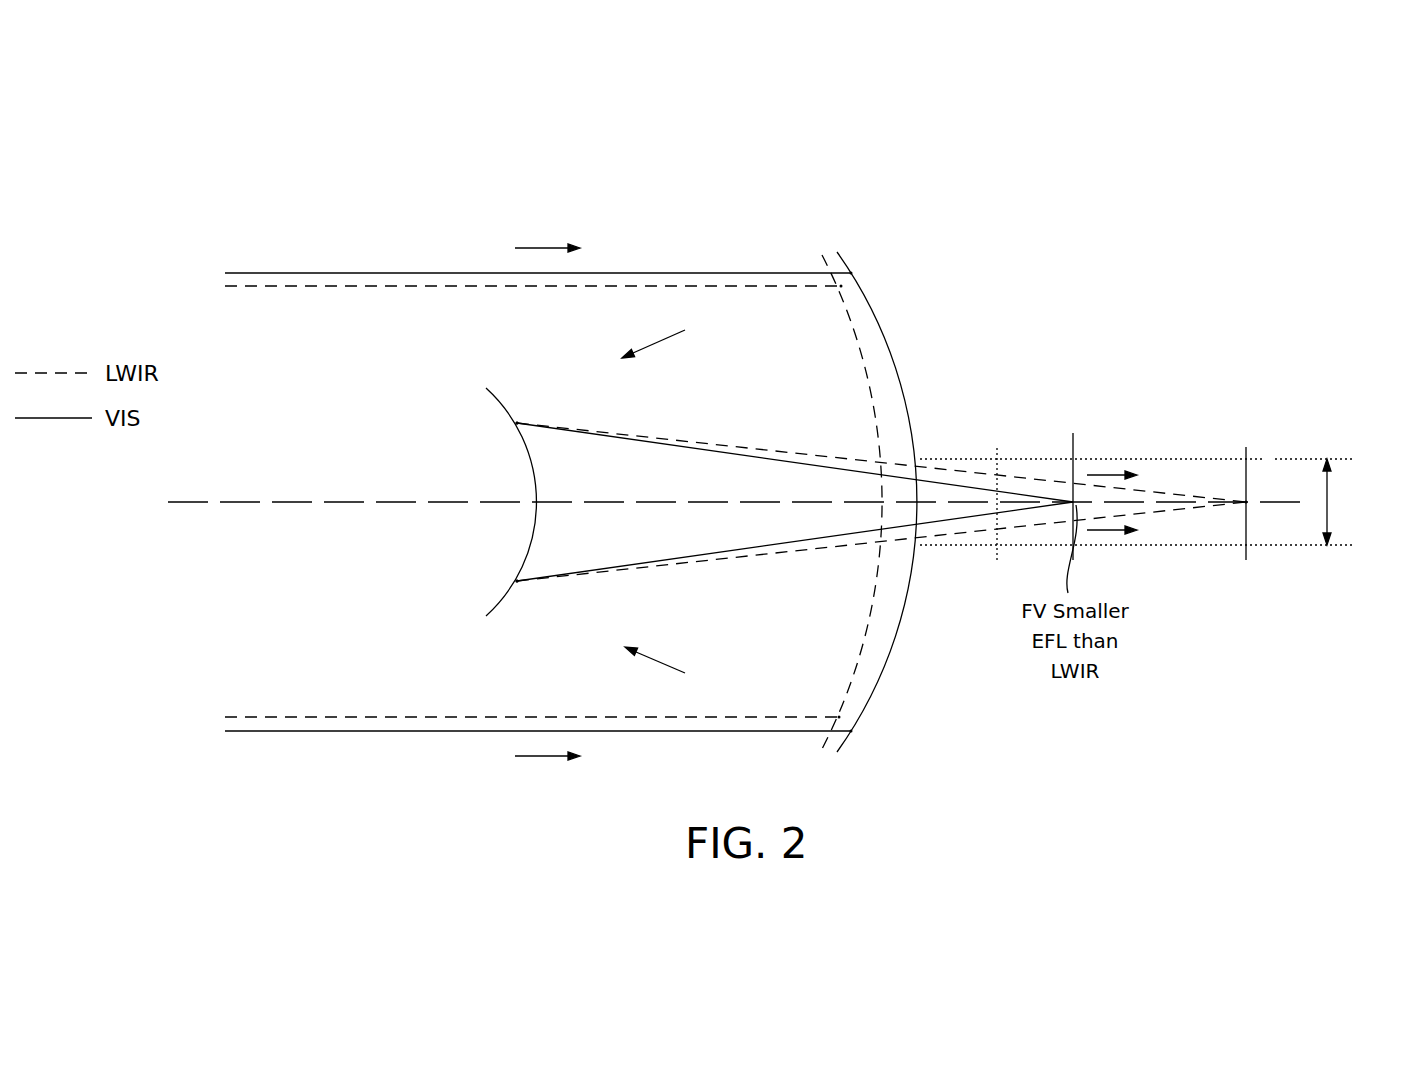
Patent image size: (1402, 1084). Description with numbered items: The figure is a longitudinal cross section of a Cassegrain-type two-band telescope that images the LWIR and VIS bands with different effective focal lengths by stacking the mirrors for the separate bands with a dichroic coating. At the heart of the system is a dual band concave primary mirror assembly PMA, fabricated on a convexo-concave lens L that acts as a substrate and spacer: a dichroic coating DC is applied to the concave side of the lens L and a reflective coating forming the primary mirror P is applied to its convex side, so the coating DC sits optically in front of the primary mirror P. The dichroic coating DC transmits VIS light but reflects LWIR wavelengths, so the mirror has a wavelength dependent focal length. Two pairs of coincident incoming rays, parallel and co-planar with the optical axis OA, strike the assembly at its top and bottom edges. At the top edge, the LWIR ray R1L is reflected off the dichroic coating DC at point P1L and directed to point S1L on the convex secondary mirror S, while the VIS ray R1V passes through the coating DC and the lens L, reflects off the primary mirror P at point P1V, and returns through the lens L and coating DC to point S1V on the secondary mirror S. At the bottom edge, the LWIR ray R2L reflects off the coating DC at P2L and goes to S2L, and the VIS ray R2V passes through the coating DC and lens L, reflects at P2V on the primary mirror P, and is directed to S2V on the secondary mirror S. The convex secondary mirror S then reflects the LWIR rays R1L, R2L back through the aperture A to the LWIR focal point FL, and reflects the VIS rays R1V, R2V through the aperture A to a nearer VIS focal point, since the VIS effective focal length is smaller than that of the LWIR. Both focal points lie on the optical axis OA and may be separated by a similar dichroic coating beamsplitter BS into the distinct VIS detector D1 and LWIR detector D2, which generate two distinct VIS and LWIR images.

The optical axis OA is at (276, 501).
The VIS ray R1V is at (300, 273).
The LWIR ray R1L is at (362, 286).
The VIS ray R2V is at (363, 731).
The LWIR ray R2L is at (295, 717).
The primary concave mirror P is at (908, 382).
The primary mirror assembly PMA is at (847, 236).
The lens L is at (887, 365).
The dichroic coating DC is at (870, 368).
The point P1V is at (851, 273).
The point P1L is at (845, 289).
The point P2V is at (851, 731).
The point P2L is at (845, 717).
The convex secondary mirror S is at (537, 468).
The point S1V is at (517, 423).
The point S1L is at (517, 425).
The point S2V is at (517, 579).
The point S2L is at (517, 581).
The beamsplitter BS is at (1002, 458).
The VIS detector D1 is at (1076, 447).
The LWIR detector D2 is at (1246, 460).
The LWIR focal point FL is at (1244, 506).
The aperture A is at (1333, 505).